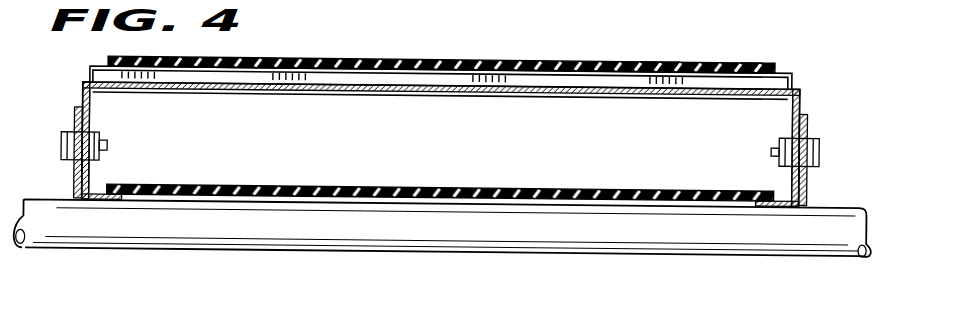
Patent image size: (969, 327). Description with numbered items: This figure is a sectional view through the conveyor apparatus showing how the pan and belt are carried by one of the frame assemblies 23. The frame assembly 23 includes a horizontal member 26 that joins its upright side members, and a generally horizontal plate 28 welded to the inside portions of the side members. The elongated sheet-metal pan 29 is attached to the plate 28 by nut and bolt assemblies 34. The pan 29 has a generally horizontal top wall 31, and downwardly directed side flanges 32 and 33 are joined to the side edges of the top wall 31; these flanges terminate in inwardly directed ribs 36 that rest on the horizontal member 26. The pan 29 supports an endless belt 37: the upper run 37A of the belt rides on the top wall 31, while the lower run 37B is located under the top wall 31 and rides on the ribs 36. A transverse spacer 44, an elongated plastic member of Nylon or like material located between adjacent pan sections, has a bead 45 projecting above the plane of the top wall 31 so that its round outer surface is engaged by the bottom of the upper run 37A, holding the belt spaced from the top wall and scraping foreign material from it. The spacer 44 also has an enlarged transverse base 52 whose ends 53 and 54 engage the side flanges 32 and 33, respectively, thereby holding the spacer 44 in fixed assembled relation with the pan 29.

The frame assembly 23 is at (857, 197).
The horizontal member 26 is at (835, 229).
The horizontal plate 28 is at (72, 125).
The pan 29 is at (814, 96).
The top wall 31 is at (643, 86).
The side flange 32 is at (92, 117).
The side flange 33 is at (791, 116).
The nut and bolt assembly 34 is at (102, 150).
The inwardly directed rib 36 is at (109, 199).
The endless belt 37 is at (660, 57).
The upper run of belt 37A is at (773, 30).
The lower run of belt 37B is at (543, 182).
The transverse spacer 44 is at (419, 58).
The bead 45 is at (566, 67).
The base 52 is at (270, 86).
The end of base 53 is at (83, 90).
The end of base 54 is at (806, 100).